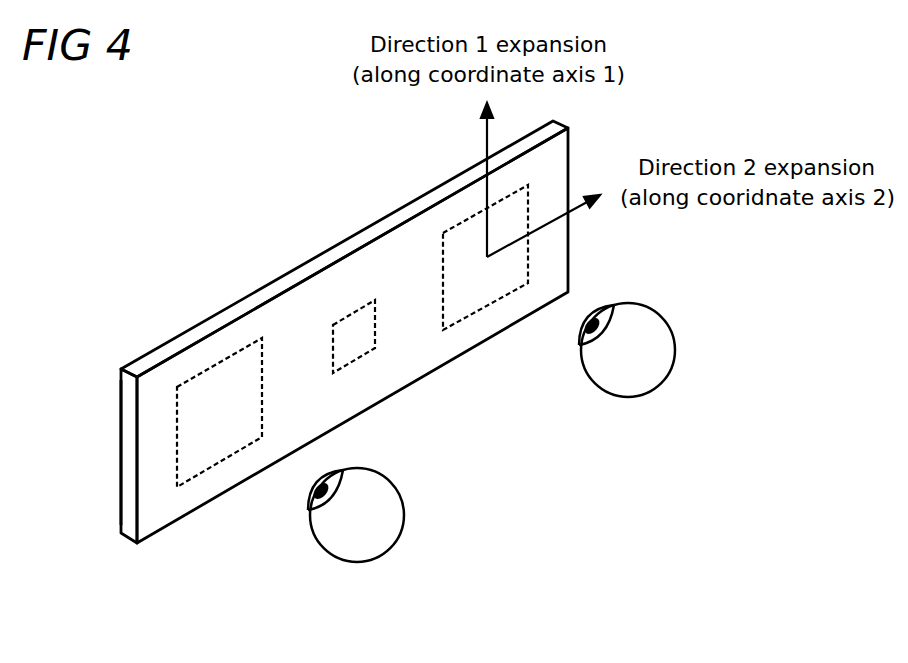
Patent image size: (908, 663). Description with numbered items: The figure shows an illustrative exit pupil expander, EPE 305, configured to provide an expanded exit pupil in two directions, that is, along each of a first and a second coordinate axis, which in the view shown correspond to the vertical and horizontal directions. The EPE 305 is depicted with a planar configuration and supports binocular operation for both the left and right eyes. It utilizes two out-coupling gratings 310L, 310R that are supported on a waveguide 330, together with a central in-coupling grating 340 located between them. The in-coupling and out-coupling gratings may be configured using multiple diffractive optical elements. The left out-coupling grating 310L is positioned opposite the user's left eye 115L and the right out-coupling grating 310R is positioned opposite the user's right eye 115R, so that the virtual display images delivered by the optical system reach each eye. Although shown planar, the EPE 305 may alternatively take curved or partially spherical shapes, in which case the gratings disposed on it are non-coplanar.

The exit pupil expander (EPE) 305 is at (74, 382).
The waveguide 330 is at (120, 497).
The left out-coupling grating 310L is at (198, 453).
The right out-coupling grating 310R is at (506, 283).
The in-coupling grating 340 is at (353, 335).
The left eye 115L is at (404, 515).
The right eye 115R is at (675, 350).